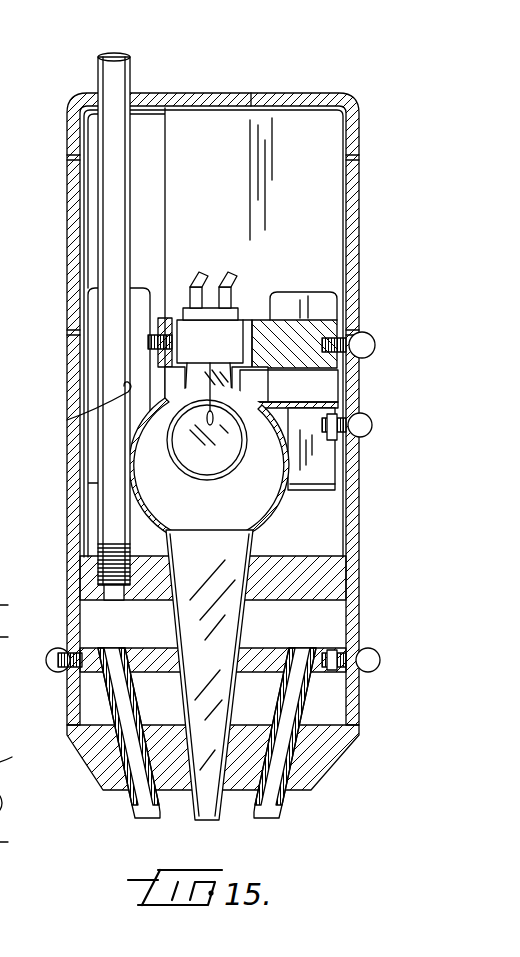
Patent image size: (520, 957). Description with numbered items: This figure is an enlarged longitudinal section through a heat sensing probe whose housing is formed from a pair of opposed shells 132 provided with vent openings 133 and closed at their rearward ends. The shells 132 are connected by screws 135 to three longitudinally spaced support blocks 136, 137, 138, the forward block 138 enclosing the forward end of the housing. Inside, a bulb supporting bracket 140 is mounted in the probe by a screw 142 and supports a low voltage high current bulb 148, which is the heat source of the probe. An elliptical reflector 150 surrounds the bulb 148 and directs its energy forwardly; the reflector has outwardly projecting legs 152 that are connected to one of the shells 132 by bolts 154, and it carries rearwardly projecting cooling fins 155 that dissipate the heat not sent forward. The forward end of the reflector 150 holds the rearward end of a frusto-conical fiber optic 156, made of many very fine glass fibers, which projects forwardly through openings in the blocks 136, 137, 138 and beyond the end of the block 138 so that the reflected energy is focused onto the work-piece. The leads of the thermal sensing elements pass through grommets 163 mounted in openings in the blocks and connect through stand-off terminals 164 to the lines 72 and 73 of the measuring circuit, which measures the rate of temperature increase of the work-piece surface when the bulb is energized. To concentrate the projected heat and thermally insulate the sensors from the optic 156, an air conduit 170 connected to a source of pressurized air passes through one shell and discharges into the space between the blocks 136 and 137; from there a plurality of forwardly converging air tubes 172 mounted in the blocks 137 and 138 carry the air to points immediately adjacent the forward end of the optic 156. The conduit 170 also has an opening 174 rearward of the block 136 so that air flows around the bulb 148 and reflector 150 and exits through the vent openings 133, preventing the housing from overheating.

The shell 132 is at (66, 103).
The vent opening 133 is at (78, 165).
The screw 135 is at (366, 668).
The support block 136 is at (325, 566).
The support block 137 is at (340, 655).
The support block 138 is at (324, 733).
The bulb supporting bracket 140 is at (281, 335).
The screw 142 is at (362, 335).
The bulb 148 is at (207, 478).
The elliptical reflector 150 is at (278, 514).
The leg 152 is at (316, 404).
The bolt 154 is at (360, 437).
The cooling fin 155 is at (150, 300).
The frusto-conical fiber optic 156 is at (236, 620).
The air conduit 170 is at (131, 74).
The air tube 172 is at (130, 812).
The opening 174 is at (70, 417).
The line 72 is at (15, 605).
The line 73 is at (15, 638).
The grommet 163 is at (20, 824).
The stand-off terminal 164 is at (21, 747).